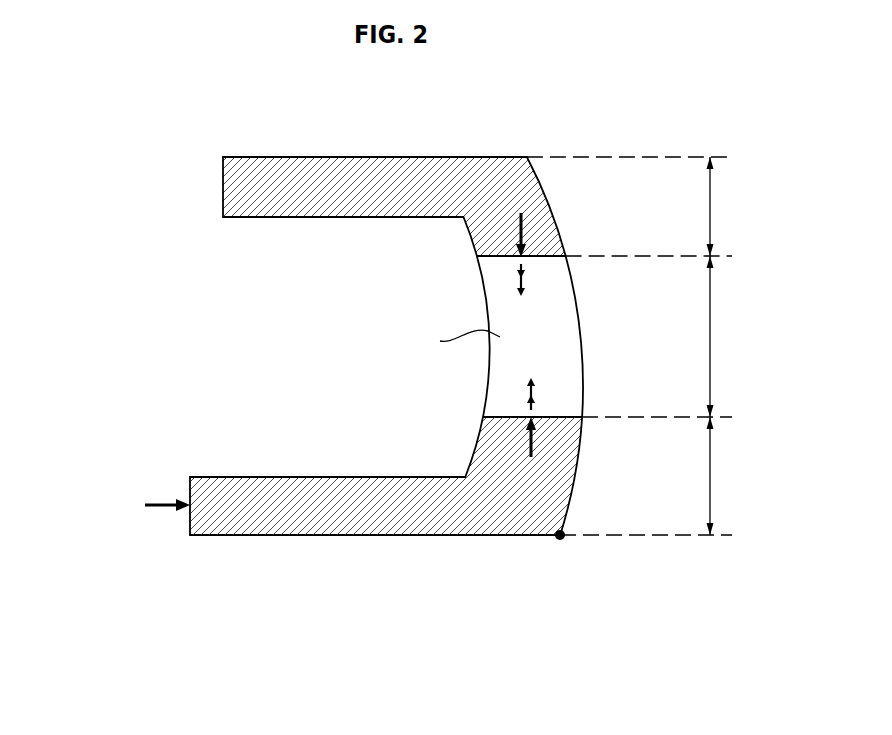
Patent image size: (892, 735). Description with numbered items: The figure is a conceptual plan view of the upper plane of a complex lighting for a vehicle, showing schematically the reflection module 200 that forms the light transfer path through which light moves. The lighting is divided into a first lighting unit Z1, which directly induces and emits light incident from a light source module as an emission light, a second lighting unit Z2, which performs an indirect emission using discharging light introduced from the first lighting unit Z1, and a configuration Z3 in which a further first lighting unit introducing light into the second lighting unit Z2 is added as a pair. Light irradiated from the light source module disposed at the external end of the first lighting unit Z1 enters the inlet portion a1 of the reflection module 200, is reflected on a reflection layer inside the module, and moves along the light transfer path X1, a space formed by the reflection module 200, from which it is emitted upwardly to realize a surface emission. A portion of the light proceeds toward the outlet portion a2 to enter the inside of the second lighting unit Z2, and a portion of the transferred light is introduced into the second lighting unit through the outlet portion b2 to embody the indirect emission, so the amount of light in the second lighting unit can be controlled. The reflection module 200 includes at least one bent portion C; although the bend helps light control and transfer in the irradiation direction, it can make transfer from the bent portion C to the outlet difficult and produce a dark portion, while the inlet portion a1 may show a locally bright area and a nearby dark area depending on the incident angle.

The reflection module 200 is at (374, 537).
The light transfer path X1 is at (284, 190).
The bent portion C is at (561, 541).
The inlet portion a1 is at (157, 506).
The outlet portion a2 is at (531, 428).
The outlet portion b2 is at (521, 244).
The first lighting unit Z1 is at (651, 476).
The second lighting unit Z2 is at (725, 336).
The configuration with paired first lighting unit Z3 is at (635, 206).